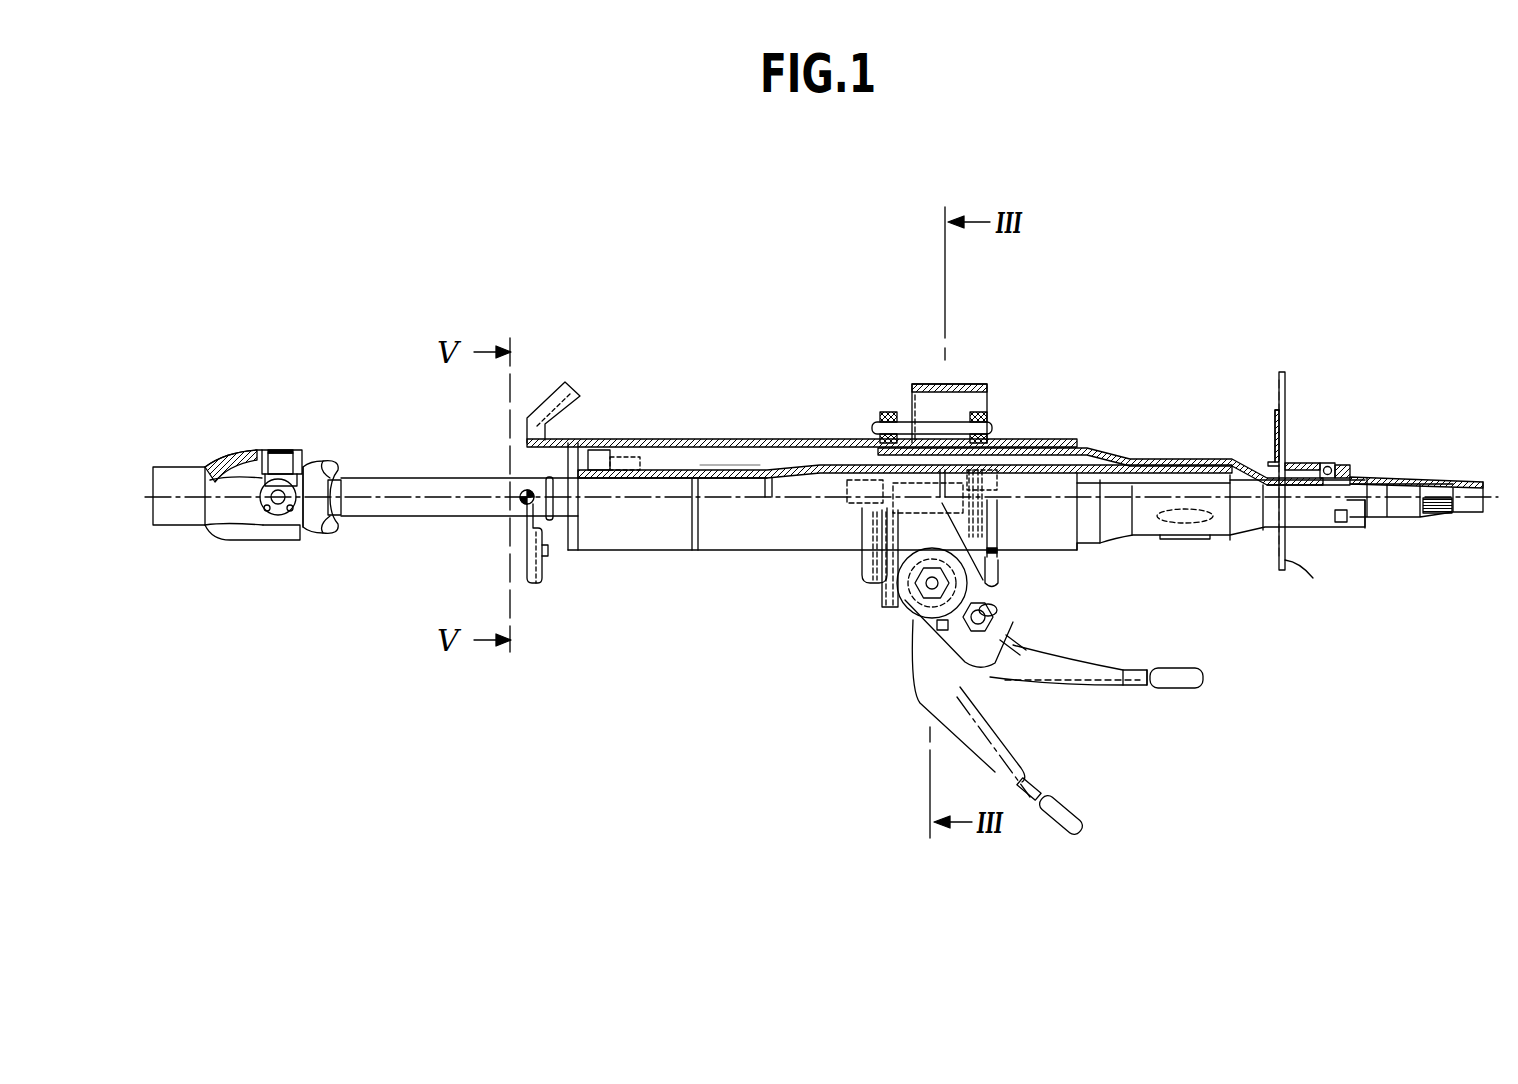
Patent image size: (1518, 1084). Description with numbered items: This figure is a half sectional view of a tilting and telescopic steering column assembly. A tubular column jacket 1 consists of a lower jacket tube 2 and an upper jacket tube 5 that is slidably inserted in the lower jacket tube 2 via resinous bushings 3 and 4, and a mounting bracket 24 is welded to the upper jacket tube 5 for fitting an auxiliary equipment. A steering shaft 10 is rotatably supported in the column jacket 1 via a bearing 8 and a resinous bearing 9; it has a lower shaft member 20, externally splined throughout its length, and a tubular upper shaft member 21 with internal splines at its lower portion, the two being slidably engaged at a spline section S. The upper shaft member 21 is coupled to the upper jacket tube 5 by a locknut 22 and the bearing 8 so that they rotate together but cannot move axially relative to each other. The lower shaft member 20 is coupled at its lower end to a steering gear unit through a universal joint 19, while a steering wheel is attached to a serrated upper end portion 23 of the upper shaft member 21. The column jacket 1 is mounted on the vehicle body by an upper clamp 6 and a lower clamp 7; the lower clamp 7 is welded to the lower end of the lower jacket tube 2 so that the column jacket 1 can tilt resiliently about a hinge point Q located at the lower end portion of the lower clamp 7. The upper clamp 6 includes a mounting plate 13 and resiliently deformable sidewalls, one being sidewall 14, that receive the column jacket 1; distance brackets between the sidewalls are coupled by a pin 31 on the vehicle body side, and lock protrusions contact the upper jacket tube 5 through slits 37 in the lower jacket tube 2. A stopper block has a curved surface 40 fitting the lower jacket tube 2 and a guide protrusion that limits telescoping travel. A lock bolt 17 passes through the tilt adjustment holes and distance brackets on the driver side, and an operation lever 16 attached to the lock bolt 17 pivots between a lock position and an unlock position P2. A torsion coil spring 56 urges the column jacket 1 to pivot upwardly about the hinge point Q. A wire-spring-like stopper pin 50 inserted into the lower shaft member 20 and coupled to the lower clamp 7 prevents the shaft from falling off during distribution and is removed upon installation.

The column jacket 1 is at (1180, 444).
The lower jacket tube 2 is at (845, 462).
The resinous bushing 3 is at (1081, 448).
The resinous bushing 4 is at (610, 450).
The upper jacket tube 5 is at (1200, 462).
The upper clamp 6 is at (966, 378).
The lower clamp 7 is at (563, 387).
The bearing 8 is at (1329, 462).
The resinous bearing 9 is at (560, 455).
The steering shaft 10 is at (1090, 460).
The mounting plate 13 is at (866, 562).
The sidewall 14 is at (1000, 558).
The operation lever 16 is at (1178, 688).
The lock bolt 17 is at (928, 600).
The universal joint 19 is at (270, 542).
The lower shaft member 20 is at (445, 516).
The upper shaft member 21 is at (790, 468).
The locknut 22 is at (1355, 482).
The serrated upper end portion 23 is at (1443, 516).
The mounting bracket 24 is at (1295, 568).
The pin 31 is at (988, 432).
The slit 37 is at (1005, 505).
The curved surface 40 is at (922, 478).
The stopper pin 50 is at (548, 470).
The torsion coil spring 56 is at (995, 567).
The hinge point Q is at (521, 505).
The spline section S is at (730, 468).
The unlock position P2 is at (997, 773).